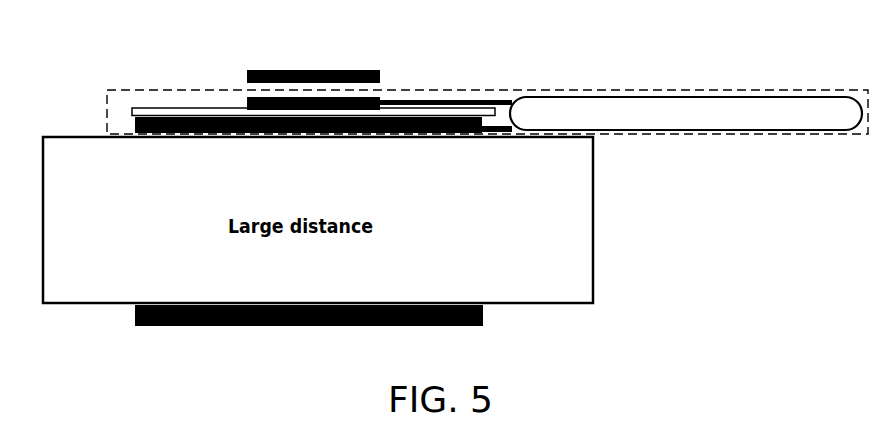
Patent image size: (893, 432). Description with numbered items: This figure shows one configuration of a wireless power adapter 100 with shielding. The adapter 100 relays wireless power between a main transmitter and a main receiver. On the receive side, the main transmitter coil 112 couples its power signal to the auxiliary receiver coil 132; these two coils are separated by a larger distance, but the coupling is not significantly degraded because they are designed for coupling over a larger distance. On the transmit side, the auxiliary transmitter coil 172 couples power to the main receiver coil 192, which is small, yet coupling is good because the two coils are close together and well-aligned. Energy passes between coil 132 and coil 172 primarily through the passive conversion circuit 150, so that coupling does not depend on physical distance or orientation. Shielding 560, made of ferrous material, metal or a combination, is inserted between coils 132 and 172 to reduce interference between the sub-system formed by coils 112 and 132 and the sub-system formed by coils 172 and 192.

The wireless power adapter 100 is at (447, 88).
The main transmitter coil 112 is at (134, 326).
The auxiliary receiver coil 132 is at (130, 116).
The passive conversion circuit 150 is at (731, 96).
The auxiliary transmitter coil 172 is at (241, 98).
The main receiver coil 192 is at (265, 68).
The shielding 560 is at (162, 106).